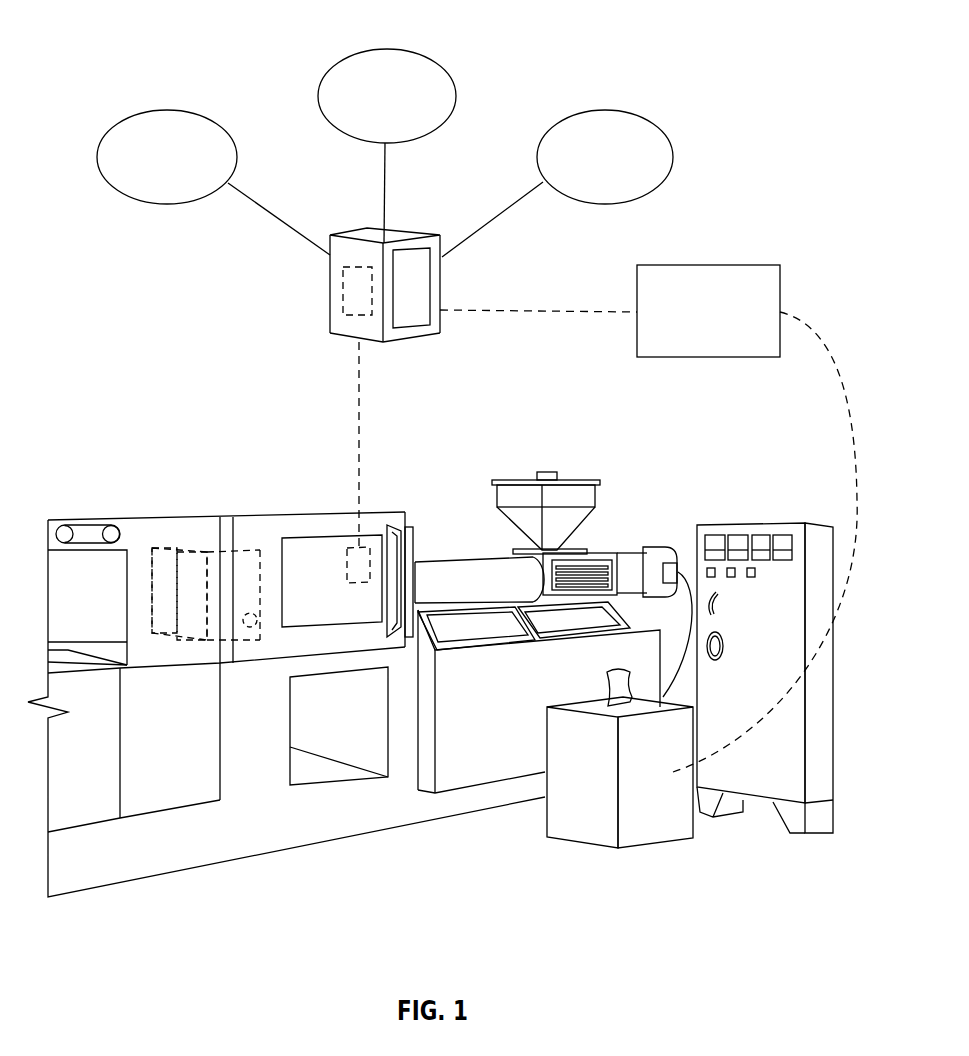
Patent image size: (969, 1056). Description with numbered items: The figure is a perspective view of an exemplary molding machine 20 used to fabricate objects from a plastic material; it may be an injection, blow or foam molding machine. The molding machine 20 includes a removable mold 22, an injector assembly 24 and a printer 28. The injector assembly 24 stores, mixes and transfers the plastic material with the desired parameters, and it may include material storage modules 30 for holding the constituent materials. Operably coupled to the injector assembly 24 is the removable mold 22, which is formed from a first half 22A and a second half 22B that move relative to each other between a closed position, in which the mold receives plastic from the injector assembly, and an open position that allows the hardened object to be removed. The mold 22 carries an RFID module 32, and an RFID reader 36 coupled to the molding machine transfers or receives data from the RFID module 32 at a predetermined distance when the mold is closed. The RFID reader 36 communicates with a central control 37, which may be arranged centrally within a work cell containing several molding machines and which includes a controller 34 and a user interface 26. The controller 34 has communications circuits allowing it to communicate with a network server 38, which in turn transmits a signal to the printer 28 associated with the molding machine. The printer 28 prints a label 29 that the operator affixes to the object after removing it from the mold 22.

The molding machine 20 is at (168, 110).
The removable mold 22 is at (205, 540).
The first half 22A is at (158, 545).
The second half 22B is at (190, 640).
The injector assembly 24 is at (438, 561).
The user interface 26 is at (423, 316).
The printer 28 is at (580, 848).
The label 29 is at (607, 682).
The material storage modules 30 is at (518, 483).
The RFID module 32 is at (258, 623).
The controller 34 is at (330, 308).
The RFID reader 36 is at (355, 547).
The central control 37 is at (348, 337).
The network server 38 is at (730, 264).